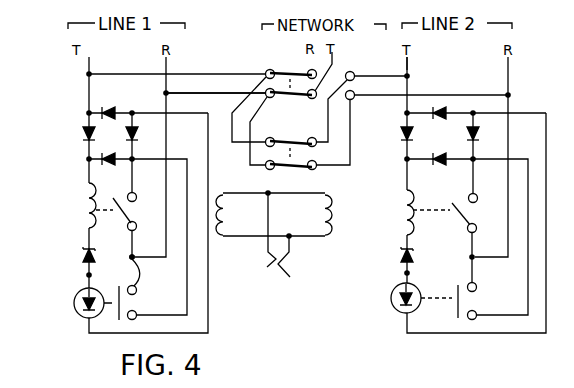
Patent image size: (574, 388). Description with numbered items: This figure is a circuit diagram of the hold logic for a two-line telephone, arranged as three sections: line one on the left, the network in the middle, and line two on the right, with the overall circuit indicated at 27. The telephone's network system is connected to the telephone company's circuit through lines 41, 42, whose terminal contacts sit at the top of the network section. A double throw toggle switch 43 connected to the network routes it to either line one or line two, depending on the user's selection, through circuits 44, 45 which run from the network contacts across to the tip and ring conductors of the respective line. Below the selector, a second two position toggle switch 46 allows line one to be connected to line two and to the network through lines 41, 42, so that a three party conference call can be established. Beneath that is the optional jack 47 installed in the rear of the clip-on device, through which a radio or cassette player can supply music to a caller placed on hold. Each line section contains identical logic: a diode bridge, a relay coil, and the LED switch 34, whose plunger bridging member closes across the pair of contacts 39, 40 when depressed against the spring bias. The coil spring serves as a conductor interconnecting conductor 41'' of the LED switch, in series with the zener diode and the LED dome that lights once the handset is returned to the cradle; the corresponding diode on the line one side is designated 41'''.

The telephone line circuit 27 is at (490, 86).
The LED switch 34 is at (143, 299).
The contact 39 is at (138, 268).
The contact 40 is at (137, 313).
The line 41 is at (283, 72).
The conductor 41'' is at (385, 264).
The zener diode 41''' is at (77, 256).
The line 42 is at (355, 75).
The double throw toggle switch 43 is at (310, 100).
The circuit 44 is at (193, 93).
The circuit 45 is at (388, 78).
The second two position toggle switch 46 is at (294, 168).
The 3.5 mm jack 47 is at (267, 270).